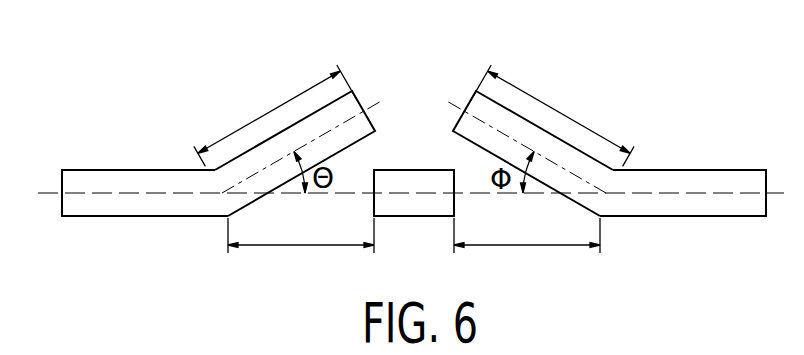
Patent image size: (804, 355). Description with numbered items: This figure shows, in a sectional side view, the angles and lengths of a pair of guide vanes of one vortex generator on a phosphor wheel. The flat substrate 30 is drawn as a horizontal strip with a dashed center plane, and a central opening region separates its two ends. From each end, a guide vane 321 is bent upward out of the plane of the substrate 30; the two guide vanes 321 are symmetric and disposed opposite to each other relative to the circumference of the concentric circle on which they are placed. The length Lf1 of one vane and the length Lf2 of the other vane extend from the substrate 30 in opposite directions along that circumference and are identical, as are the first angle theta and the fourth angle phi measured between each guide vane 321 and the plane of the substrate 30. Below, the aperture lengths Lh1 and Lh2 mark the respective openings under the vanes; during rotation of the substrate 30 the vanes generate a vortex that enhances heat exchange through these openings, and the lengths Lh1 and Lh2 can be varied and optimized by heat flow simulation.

The substrate 30 is at (122, 180).
The guide vane 321 is at (470, 100).
The length of first guide vane Lf1 is at (276, 113).
The length of second guide vane Lf2 is at (552, 113).
The aperture length of first opening Lh1 is at (301, 252).
The aperture length of second opening Lh2 is at (527, 252).